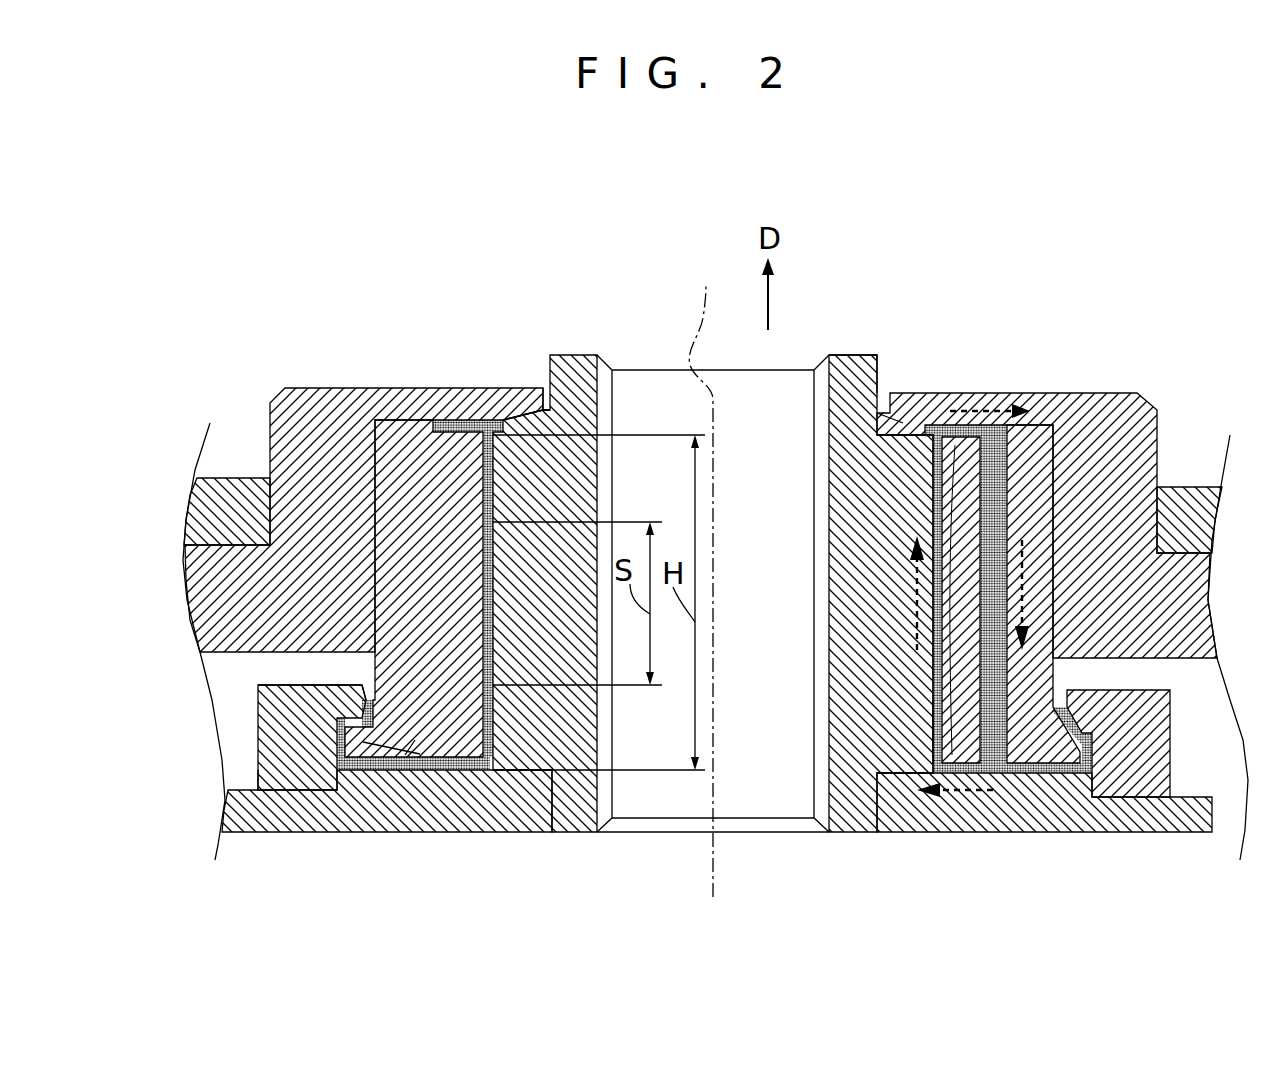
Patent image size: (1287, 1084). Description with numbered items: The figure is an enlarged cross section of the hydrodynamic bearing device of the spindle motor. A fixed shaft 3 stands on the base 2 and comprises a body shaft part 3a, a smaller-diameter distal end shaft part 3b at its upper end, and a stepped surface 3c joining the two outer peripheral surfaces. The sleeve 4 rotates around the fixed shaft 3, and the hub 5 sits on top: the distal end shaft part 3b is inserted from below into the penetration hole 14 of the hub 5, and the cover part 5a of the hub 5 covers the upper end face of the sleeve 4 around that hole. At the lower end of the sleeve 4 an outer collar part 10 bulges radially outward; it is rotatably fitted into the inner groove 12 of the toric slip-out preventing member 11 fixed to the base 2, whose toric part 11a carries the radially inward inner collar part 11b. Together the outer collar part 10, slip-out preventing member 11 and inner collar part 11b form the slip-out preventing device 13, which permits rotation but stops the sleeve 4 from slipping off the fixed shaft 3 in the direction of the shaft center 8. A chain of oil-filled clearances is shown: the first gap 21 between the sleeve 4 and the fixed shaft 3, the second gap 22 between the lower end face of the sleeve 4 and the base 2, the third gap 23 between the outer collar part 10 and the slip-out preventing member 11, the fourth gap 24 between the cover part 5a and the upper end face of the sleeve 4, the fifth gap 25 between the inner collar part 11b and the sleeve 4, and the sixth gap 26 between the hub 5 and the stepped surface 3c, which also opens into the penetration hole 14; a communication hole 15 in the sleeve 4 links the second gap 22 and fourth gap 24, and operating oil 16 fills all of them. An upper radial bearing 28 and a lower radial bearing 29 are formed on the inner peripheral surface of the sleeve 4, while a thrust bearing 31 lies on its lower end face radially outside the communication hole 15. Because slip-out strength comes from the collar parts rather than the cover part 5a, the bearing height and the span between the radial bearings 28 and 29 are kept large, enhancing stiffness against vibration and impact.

The base 2 is at (486, 832).
The fixed shaft 3 is at (573, 362).
The body shaft part 3a is at (870, 550).
The distal end shaft part 3b is at (862, 358).
The stepped surface 3c is at (545, 400).
The sleeve 4 is at (368, 512).
The hub 5 is at (1152, 398).
The cover part 5a is at (447, 388).
The shaft center 8 is at (702, 574).
The outer collar part 10 is at (336, 760).
The slip-out preventing member 11 is at (250, 728).
The toric part 11a is at (256, 771).
The inner collar part 11b is at (347, 682).
The inner groove 12 is at (1080, 800).
The slip-out preventing device 13 is at (347, 667).
The penetration hole 14 is at (543, 396).
The communication hole 15 is at (1015, 482).
The operating oil 16 is at (500, 470).
The first gap 21 is at (933, 664).
The second gap 22 is at (1023, 775).
The third gap 23 is at (1092, 743).
The fourth gap 24 is at (945, 424).
The fifth gap 25 is at (1067, 707).
The sixth gap 26 is at (900, 420).
The upper radial bearing 28 is at (933, 470).
The lower radial bearing 29 is at (933, 733).
The thrust bearing 31 is at (415, 760).